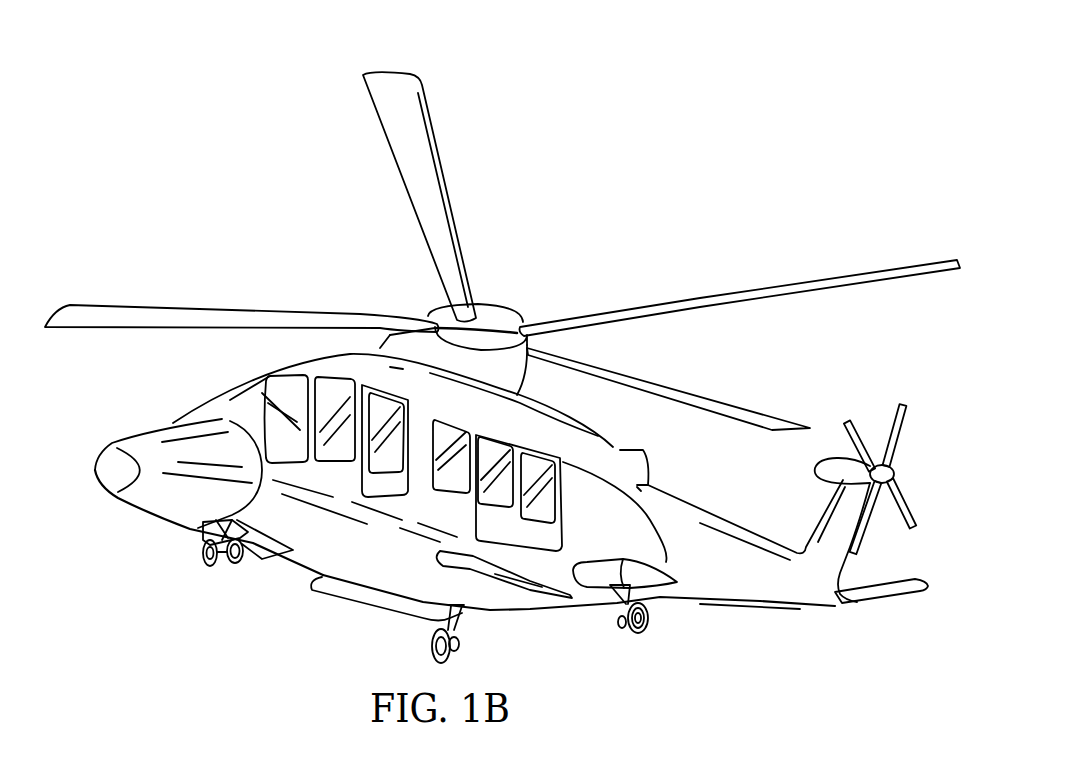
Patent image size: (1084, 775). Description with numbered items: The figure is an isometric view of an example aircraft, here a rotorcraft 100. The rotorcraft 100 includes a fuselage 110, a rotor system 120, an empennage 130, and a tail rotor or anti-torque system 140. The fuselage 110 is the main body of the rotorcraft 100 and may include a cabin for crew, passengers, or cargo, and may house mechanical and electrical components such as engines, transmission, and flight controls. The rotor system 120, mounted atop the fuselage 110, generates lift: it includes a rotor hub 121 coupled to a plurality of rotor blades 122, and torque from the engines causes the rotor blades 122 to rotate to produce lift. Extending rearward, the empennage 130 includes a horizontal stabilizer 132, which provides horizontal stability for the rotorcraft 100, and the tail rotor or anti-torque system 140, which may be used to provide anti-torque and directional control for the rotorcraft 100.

The rotorcraft 100 is at (226, 70).
The fuselage 110 is at (310, 562).
The rotor system 120 is at (514, 280).
The rotor hub 121 is at (436, 312).
The rotor blades 122 is at (727, 303).
The empennage 130 is at (699, 590).
The horizontal stabilizer 132 is at (888, 600).
The tail rotor or anti-torque system 140 is at (886, 388).